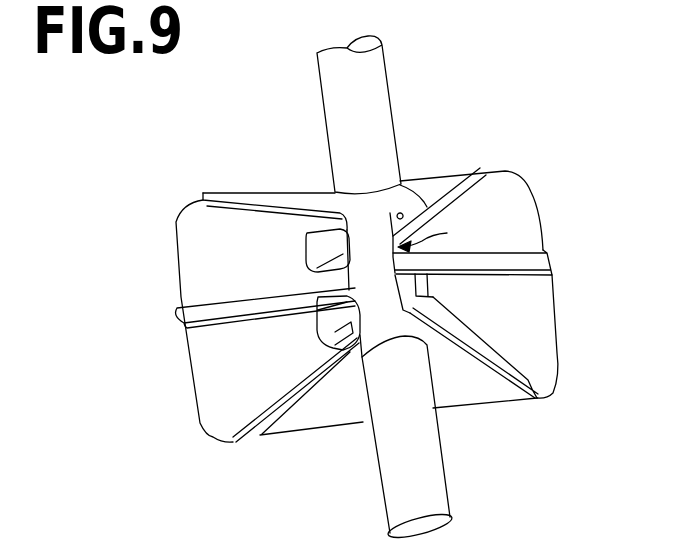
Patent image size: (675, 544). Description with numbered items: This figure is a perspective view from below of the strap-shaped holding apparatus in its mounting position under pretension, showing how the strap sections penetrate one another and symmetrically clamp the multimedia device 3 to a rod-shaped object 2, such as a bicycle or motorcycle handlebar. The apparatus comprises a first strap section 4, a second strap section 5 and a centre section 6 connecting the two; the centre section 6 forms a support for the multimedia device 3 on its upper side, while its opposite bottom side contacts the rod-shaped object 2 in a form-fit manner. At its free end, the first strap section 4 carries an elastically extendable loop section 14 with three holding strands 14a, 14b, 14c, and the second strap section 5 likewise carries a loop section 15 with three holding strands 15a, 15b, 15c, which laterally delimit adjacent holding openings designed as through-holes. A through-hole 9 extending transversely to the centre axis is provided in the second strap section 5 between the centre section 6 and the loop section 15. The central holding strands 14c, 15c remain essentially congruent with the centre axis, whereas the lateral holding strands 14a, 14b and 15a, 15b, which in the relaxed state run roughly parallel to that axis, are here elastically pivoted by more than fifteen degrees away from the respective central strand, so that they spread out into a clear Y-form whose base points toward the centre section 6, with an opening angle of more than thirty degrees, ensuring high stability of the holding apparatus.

The rod-shaped object 2 is at (383, 108).
The multimedia device 3 is at (465, 397).
The first strap section 4 is at (318, 325).
The second strap section 5 is at (430, 285).
The centre section 6 is at (394, 367).
The through-hole 9 is at (432, 236).
The loop section 14 is at (491, 301).
The holding strand 14a is at (463, 187).
The holding strand 14b is at (527, 383).
The holding strand 14c is at (488, 260).
The loop section 15 is at (269, 315).
The holding strand 15a is at (267, 197).
The holding strand 15b is at (268, 413).
The holding strand 15c is at (253, 294).